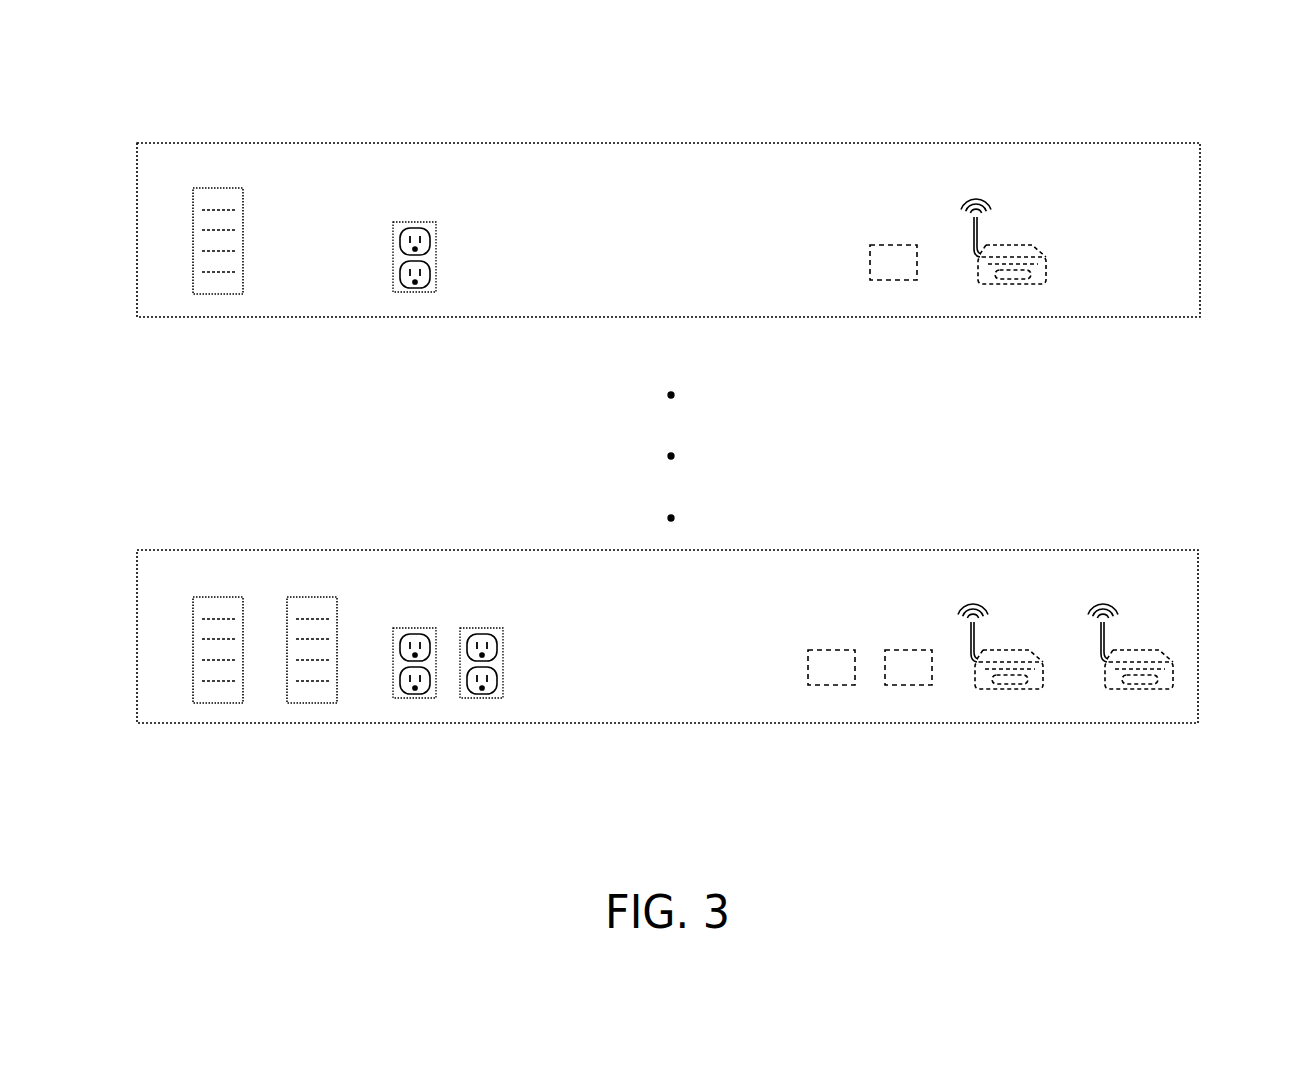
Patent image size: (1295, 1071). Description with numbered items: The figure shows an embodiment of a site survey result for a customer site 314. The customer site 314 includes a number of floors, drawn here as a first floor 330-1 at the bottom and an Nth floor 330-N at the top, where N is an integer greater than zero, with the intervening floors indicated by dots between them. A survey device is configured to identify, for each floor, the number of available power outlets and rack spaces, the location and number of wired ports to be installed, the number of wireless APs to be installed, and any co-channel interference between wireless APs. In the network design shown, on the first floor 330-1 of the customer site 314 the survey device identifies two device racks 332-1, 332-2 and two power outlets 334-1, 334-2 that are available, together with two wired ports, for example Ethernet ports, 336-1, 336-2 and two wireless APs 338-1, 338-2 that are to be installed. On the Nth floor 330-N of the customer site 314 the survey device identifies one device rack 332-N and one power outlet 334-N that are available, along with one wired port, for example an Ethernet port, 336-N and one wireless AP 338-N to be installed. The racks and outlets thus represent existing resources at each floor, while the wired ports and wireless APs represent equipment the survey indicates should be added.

The customer site 314 is at (686, 55).
The Nth floor 330-N is at (1200, 298).
The first floor 330-1 is at (1198, 705).
The device rack 332-N is at (210, 188).
The device rack 332-1 is at (218, 589).
The device rack 332-2 is at (320, 589).
The power outlet 334-N is at (423, 211).
The power outlet 334-1 is at (423, 618).
The power outlet 334-2 is at (489, 617).
The wired port 336-N is at (893, 244).
The wired port 336-1 is at (831, 649).
The wired port 336-2 is at (905, 649).
The wireless AP 338-N is at (1026, 244).
The wireless AP 338-1 is at (1010, 648).
The wireless AP 338-2 is at (1138, 649).